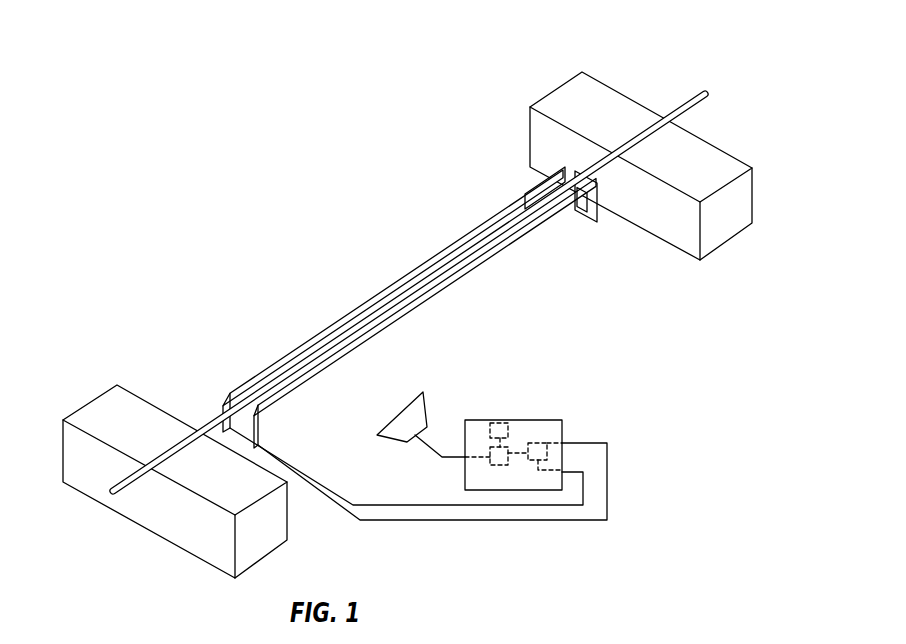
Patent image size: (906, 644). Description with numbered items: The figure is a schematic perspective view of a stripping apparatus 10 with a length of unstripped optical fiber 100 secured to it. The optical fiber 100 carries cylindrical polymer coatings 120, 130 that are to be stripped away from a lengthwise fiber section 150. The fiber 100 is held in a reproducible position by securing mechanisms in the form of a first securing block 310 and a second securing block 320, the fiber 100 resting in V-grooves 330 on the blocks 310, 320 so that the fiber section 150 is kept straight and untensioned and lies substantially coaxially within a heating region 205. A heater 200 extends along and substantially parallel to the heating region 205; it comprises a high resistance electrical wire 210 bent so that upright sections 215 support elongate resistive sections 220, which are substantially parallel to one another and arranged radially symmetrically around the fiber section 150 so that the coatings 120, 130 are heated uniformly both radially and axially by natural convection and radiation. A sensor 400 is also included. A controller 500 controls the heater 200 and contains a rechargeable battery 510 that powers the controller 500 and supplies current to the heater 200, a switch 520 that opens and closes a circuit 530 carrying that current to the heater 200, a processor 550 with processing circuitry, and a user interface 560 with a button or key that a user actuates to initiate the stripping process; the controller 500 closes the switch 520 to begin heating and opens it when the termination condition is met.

The stripping apparatus 10 is at (338, 170).
The optical fiber 100 is at (706, 113).
The polymer coating 120 is at (668, 113).
The polymer coating 130 is at (687, 92).
The fiber section 150 is at (440, 271).
The heater 200 is at (500, 280).
The heating region 205 is at (523, 205).
The electrical wire 210 is at (580, 214).
The upright sections 215 is at (222, 403).
The elongate sections 220 is at (328, 328).
The first securing block 310 is at (735, 244).
The second securing block 320 is at (103, 392).
The V-grooves 330 is at (628, 119).
The sensor 400 is at (427, 403).
The controller 500 is at (562, 420).
The rechargeable battery 510 is at (526, 453).
The switch 520 is at (538, 473).
The circuit 530 is at (583, 498).
The processor 550 is at (490, 465).
The user interface 560 is at (508, 423).